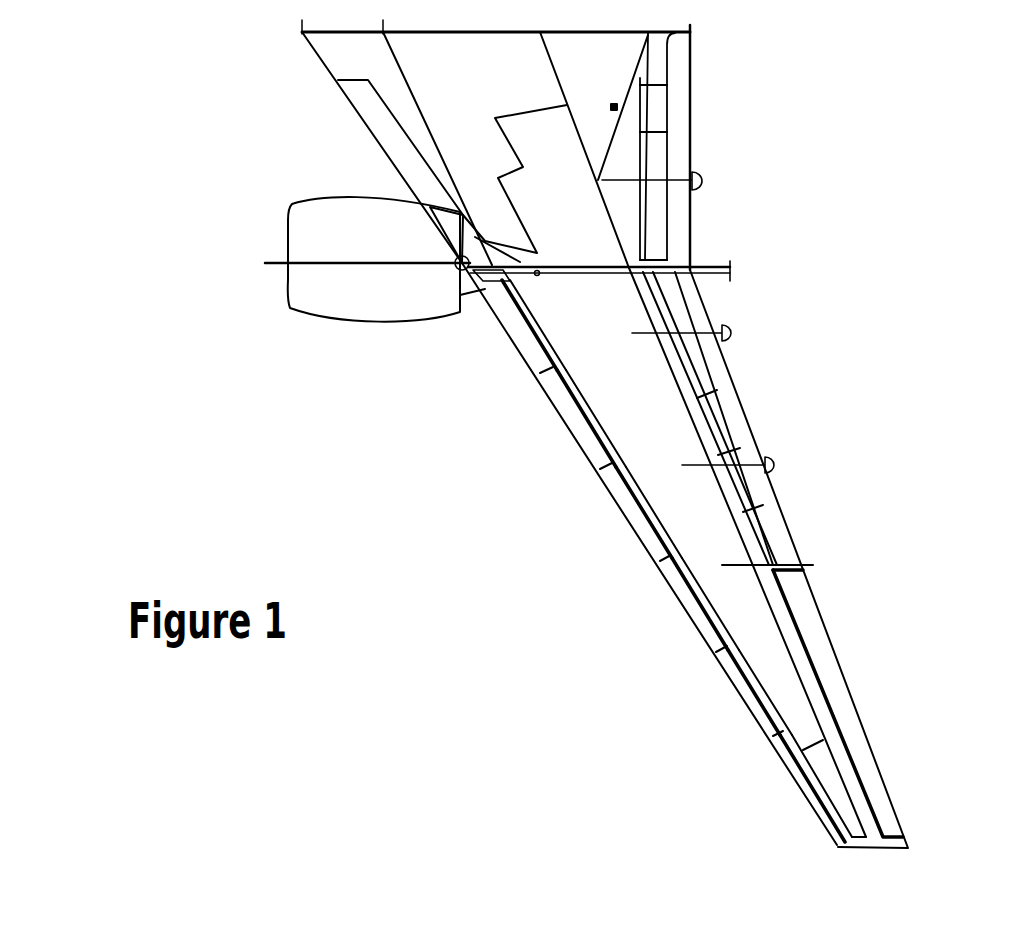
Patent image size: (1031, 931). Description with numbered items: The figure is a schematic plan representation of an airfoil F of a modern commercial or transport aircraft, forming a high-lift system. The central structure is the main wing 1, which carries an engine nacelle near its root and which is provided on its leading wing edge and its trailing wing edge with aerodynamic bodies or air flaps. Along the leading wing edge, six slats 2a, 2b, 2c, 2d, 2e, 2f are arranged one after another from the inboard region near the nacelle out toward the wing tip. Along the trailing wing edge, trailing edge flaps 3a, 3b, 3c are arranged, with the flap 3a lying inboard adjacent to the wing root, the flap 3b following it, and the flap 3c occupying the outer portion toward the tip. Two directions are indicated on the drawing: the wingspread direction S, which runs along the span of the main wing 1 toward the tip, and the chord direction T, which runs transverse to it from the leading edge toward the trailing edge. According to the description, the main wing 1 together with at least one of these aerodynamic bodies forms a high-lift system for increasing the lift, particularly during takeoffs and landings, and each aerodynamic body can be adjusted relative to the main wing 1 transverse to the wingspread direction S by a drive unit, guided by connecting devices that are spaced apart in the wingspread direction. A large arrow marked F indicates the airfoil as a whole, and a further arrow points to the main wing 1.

The main wing 1 is at (525, 691).
The slat 2a is at (523, 332).
The slat 2b is at (578, 420).
The slat 2c is at (634, 521).
The slat 2d is at (697, 607).
The slat 2e is at (752, 690).
The slat 2f is at (813, 792).
The trailing edge flap 3a is at (680, 109).
The trailing edge flap 3b is at (730, 392).
The trailing edge flap 3c is at (810, 605).
The airfoil F is at (858, 220).
The chord direction T is at (628, 313).
The wingspread direction S is at (628, 360).